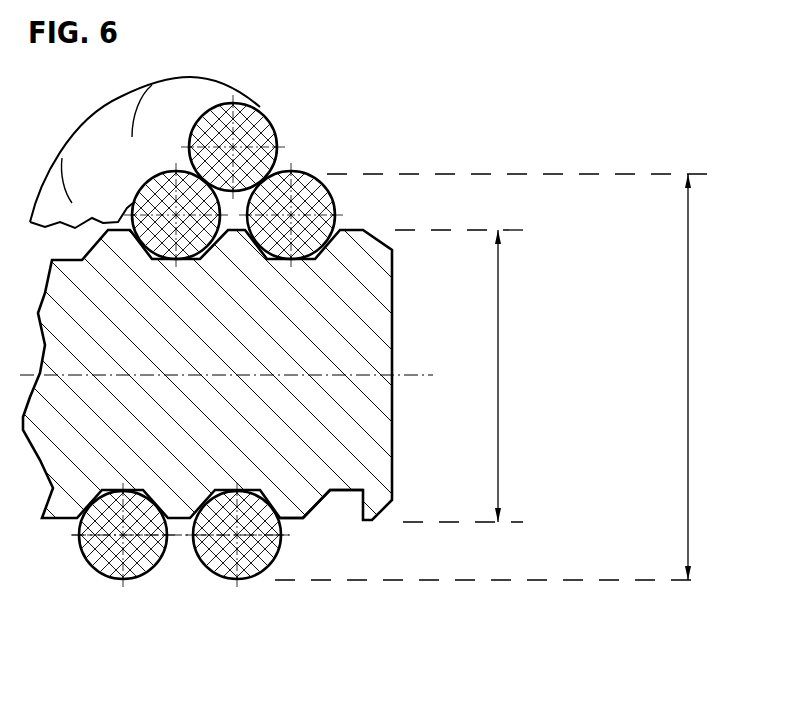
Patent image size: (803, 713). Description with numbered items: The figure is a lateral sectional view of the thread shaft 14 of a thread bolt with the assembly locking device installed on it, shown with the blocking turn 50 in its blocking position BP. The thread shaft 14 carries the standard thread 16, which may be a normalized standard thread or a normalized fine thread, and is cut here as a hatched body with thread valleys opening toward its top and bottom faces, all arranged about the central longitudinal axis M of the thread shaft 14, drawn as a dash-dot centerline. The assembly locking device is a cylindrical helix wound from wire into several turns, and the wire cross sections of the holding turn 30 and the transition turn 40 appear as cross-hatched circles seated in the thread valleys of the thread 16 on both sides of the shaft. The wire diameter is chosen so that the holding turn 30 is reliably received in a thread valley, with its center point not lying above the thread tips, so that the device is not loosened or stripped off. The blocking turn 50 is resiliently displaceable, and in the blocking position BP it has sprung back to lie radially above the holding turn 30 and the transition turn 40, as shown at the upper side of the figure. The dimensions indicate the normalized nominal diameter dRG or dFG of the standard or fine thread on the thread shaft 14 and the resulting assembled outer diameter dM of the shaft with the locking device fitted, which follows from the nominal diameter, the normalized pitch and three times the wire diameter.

The thread shaft 14 is at (313, 400).
The standard thread 16 is at (303, 502).
The holding turn 30 is at (258, 555).
The transition turn 40 is at (140, 562).
The blocking turn 50 is at (262, 113).
The blocking position BP is at (277, 128).
The central longitudinal axis M is at (418, 375).
The nominal diameter of the standard thread dRG is at (498, 375).
The nominal diameter of the fine thread dFG is at (603, 357).
The assembled outer diameter dM is at (688, 353).